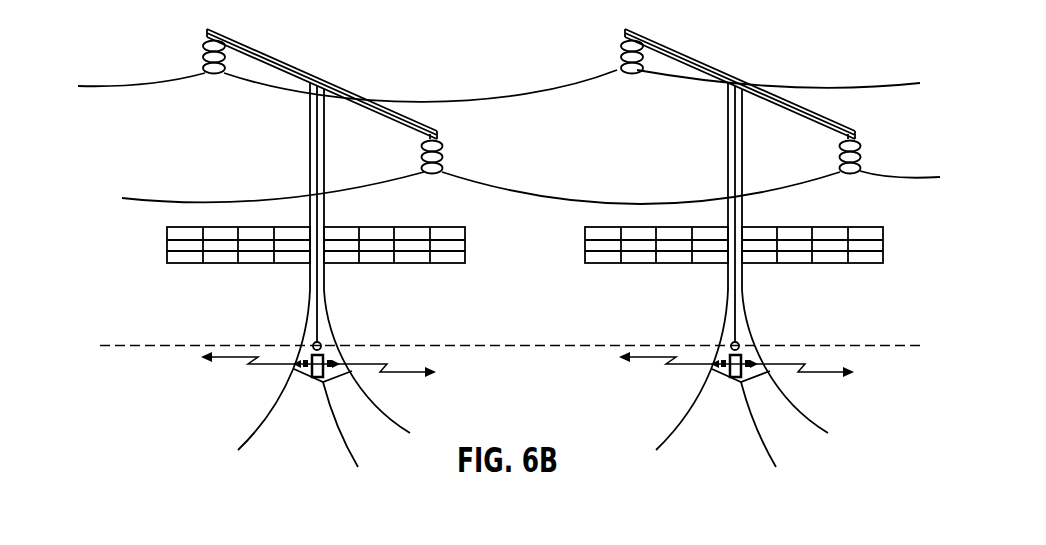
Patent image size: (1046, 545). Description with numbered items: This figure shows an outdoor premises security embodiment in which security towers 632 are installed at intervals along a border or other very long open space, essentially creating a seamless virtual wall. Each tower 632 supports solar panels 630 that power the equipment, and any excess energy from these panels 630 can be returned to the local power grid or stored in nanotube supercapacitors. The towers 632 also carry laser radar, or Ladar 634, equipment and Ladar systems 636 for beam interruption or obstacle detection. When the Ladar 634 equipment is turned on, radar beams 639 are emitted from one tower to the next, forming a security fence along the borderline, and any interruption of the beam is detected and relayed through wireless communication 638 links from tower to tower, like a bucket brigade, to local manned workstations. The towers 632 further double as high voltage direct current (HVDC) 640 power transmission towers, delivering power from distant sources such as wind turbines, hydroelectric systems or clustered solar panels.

The solar panels 630 is at (382, 232).
The security towers 632 is at (311, 285).
The Ladar 634 is at (313, 341).
The Ladar systems 636 is at (327, 354).
The wireless communication links 638 is at (398, 375).
The radar beams 639 is at (522, 343).
The high voltage direct current (HVDC) power transmission 640 is at (190, 129).